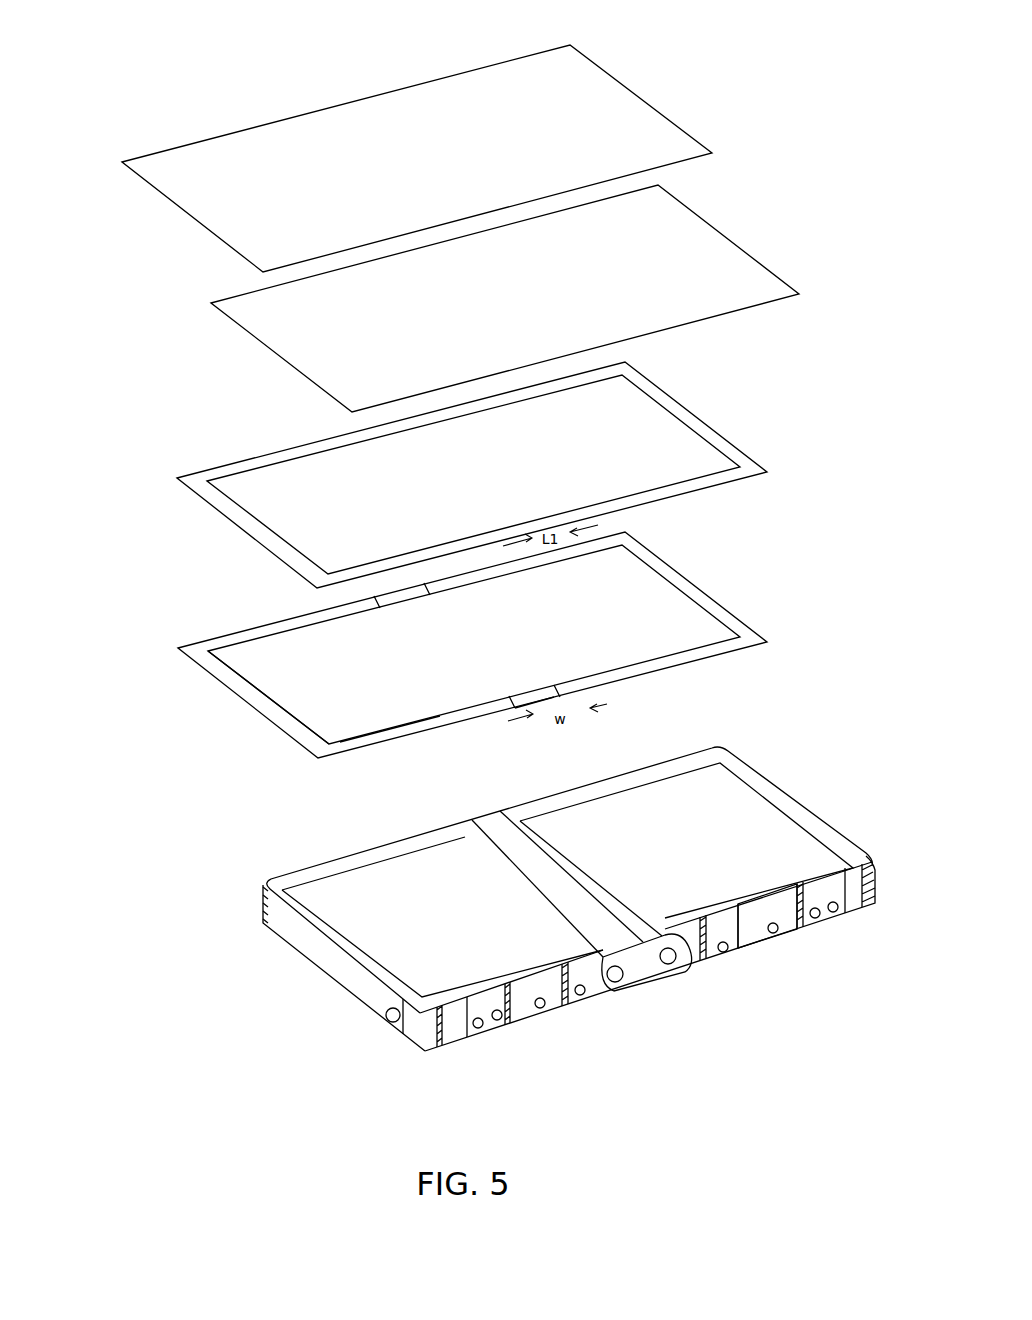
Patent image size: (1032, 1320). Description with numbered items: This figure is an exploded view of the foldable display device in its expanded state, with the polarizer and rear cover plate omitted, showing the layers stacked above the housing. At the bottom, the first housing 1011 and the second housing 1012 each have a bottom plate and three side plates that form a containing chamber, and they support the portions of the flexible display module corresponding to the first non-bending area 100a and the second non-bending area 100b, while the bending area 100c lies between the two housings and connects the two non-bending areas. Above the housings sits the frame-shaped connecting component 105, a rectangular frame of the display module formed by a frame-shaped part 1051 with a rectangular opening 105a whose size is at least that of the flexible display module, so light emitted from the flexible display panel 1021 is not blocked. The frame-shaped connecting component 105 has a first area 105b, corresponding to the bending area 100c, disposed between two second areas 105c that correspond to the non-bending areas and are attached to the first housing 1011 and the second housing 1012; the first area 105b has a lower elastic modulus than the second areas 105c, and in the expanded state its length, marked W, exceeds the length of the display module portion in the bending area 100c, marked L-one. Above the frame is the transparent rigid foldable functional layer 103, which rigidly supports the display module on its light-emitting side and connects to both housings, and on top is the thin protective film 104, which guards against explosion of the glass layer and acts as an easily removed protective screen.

The protective film 104 is at (163, 182).
The rigid foldable functional layer 103 is at (253, 323).
The flexible display panel 1021 is at (222, 506).
The frame-shaped connecting component 105 is at (448, 659).
The frame-shaped part 1051 is at (295, 730).
The opening 105a is at (367, 707).
The first area 105b is at (563, 684).
The second areas 105c is at (453, 718).
The first housing 1011 is at (300, 935).
The second housing 1012 is at (755, 927).
The first non-bending area 100a is at (518, 1082).
The second non-bending area 100b is at (863, 1030).
The bending area 100c is at (683, 1062).